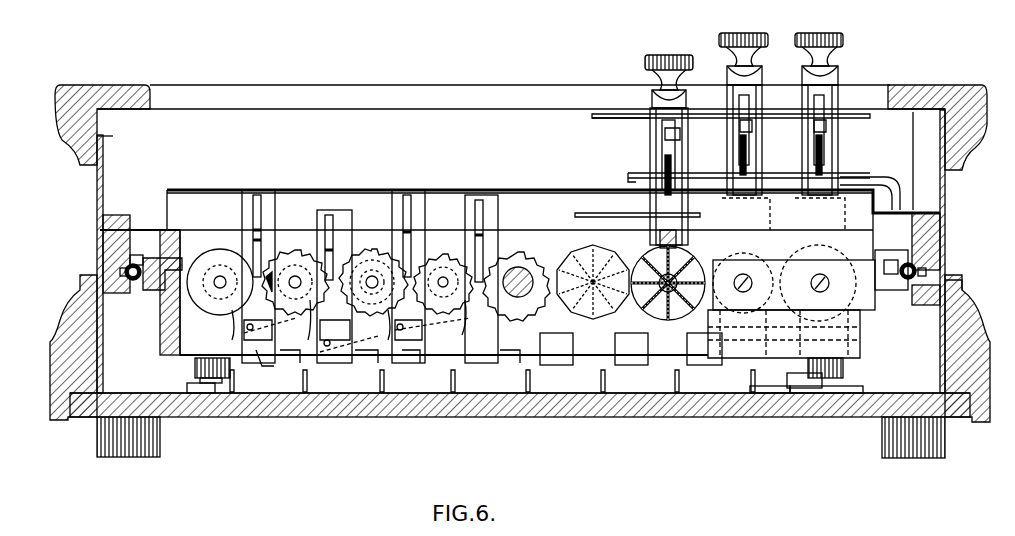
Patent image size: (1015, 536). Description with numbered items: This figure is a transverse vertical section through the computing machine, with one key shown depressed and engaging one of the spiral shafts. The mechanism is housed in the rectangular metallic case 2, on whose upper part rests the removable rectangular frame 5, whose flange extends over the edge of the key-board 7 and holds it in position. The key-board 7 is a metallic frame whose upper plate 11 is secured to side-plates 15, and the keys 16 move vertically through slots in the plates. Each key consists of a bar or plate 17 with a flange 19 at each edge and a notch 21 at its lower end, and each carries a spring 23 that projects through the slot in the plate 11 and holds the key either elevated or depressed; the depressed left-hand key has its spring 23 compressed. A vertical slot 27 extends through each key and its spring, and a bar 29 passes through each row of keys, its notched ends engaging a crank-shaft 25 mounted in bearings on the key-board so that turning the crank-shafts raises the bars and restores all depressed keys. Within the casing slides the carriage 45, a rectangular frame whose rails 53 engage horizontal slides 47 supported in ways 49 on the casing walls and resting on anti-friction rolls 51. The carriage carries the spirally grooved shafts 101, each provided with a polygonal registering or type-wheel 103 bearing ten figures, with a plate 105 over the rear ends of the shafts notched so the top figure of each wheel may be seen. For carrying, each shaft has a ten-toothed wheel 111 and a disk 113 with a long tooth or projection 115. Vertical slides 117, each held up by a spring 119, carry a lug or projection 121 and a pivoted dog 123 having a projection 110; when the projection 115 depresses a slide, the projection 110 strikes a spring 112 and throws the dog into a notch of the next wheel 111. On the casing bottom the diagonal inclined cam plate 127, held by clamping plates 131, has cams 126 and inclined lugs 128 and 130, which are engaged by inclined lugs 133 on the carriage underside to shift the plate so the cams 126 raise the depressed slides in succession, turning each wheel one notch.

The case 2 is at (72, 318).
The removable rectangular frame 5 is at (108, 88).
The key-board 7 is at (600, 113).
The upper plate 11 is at (632, 118).
The side-plates 15 is at (935, 138).
The keys 16 is at (666, 60).
The bar or plate 17 is at (758, 165).
The flange 19 is at (652, 144).
The notch 21 is at (680, 246).
The spring 23 is at (672, 130).
The crank-shafts 25 is at (870, 182).
The vertical slot 27 is at (660, 167).
The bar 29 is at (628, 182).
The carriage 45 is at (182, 340).
The horizontal slides 47 is at (130, 265).
The ways 49 is at (130, 225).
The anti-friction rolls 51 is at (120, 295).
The rails 53 is at (140, 290).
The spirally grooved shafts 101 is at (652, 262).
The polygonal registering or type-wheel 103 is at (585, 262).
The plate 105 is at (332, 198).
The projection 110 is at (232, 325).
The wheel 111 is at (530, 312).
The spring 112 is at (308, 392).
The disk 113 is at (210, 258).
The long tooth or projection 115 is at (264, 282).
The vertical slide 117 is at (275, 220).
The spring 119 is at (262, 206).
The lug or projection 121 is at (440, 302).
The pivoted dogs 123 is at (292, 362).
The cams 126 is at (526, 374).
The inclined cam plate 127 is at (498, 393).
The inclined lug 128 is at (212, 383).
The inclined lug 130 is at (807, 382).
The clamping plates 131 is at (848, 393).
The inclined lugs 133 is at (195, 370).